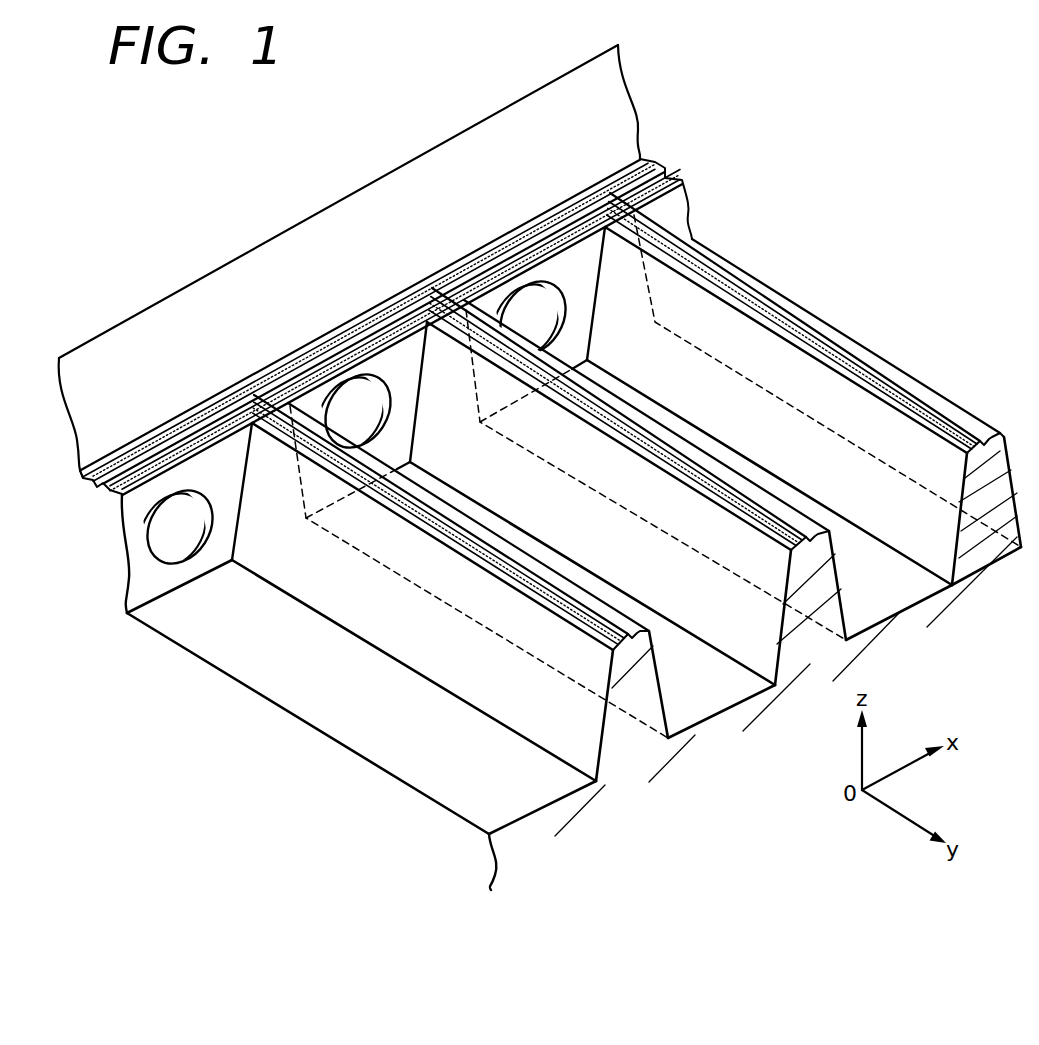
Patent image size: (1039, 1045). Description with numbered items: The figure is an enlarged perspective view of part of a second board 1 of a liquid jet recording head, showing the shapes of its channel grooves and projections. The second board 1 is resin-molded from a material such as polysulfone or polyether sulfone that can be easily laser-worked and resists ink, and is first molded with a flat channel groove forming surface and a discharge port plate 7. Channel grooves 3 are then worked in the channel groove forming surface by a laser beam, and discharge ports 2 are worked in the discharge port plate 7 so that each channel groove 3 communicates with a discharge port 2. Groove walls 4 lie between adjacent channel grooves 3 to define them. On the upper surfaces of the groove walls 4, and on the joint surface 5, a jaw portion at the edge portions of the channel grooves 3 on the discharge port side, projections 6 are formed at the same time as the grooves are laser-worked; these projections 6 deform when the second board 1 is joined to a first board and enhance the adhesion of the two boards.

The second board 1 is at (731, 232).
The discharge ports 2 is at (385, 378).
The channel grooves 3 is at (668, 650).
The groove walls 4 is at (810, 633).
The joint surface 5 is at (373, 360).
The projections 6 is at (214, 672).
The discharge port plate 7 is at (128, 333).